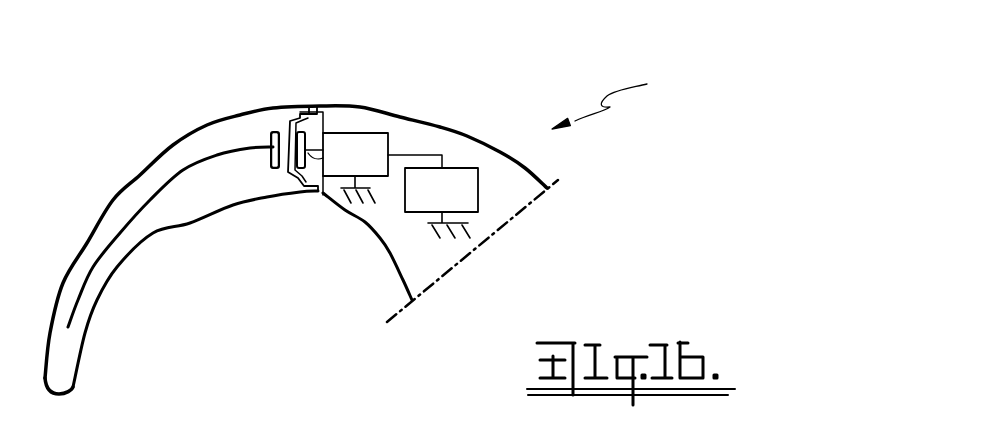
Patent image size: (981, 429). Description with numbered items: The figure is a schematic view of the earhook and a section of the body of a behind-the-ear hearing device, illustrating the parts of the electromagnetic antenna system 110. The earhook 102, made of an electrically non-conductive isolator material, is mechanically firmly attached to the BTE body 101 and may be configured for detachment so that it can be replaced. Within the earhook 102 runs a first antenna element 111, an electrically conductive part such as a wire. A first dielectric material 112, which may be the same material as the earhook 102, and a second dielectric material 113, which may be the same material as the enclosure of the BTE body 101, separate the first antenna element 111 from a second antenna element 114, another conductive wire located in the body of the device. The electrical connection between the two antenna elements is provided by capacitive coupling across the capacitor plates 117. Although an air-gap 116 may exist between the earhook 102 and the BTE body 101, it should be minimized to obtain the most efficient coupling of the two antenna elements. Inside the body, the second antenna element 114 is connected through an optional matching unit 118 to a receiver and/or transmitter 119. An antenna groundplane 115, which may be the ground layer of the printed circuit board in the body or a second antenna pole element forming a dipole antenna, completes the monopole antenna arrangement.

The BTE body 101 is at (400, 277).
The earhook 102 is at (85, 338).
The electromagnetic antenna system 110 is at (626, 99).
The first antenna element 111 is at (178, 181).
The first dielectric material 112 is at (273, 131).
The second dielectric material 113 is at (309, 132).
The second antenna element 114 is at (326, 165).
The antenna groundplane 115 is at (340, 207).
The air-gap 116 is at (314, 106).
The capacitor plates 117 is at (303, 169).
The matching unit 118 is at (360, 160).
The receiver and/or transmitter 119 is at (433, 183).